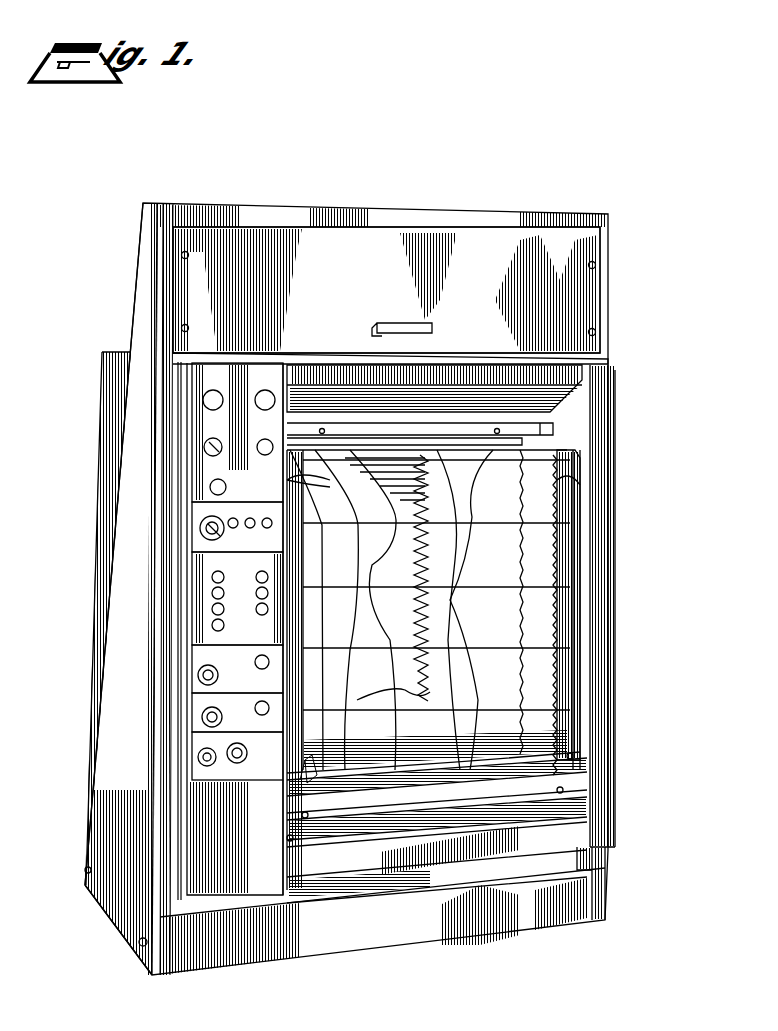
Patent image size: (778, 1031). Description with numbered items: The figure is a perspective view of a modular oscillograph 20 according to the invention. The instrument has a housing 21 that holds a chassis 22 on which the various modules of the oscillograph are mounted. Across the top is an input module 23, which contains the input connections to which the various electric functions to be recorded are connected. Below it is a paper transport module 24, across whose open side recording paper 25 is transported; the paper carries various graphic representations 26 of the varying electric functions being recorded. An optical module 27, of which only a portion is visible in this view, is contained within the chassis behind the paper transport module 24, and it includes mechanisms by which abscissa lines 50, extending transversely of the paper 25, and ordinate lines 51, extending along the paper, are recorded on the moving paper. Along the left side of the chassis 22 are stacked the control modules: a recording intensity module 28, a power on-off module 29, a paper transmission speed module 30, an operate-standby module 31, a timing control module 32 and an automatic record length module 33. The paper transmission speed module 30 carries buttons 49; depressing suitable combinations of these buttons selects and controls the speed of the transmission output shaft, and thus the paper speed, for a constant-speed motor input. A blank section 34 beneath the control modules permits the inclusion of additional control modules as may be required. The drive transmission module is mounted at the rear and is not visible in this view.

The modular oscillograph 20 is at (626, 292).
The housing 21 is at (97, 384).
The chassis 22 is at (108, 403).
The input module 23 is at (583, 263).
The paper transport module 24 is at (591, 563).
The recording paper 25 is at (562, 682).
The graphic representations 26 is at (412, 630).
The optical module 27 is at (576, 377).
The recording intensity module 28 is at (203, 440).
The power on-off module 29 is at (200, 525).
The paper transmission speed module 30 is at (205, 625).
The operate-standby module 31 is at (205, 662).
The timing control module 32 is at (205, 703).
The automatic record length module 33 is at (205, 750).
The blank section 34 is at (195, 820).
The buttons 49 is at (255, 574).
The abscissa lines 50 is at (560, 618).
The ordinate lines 51 is at (375, 695).